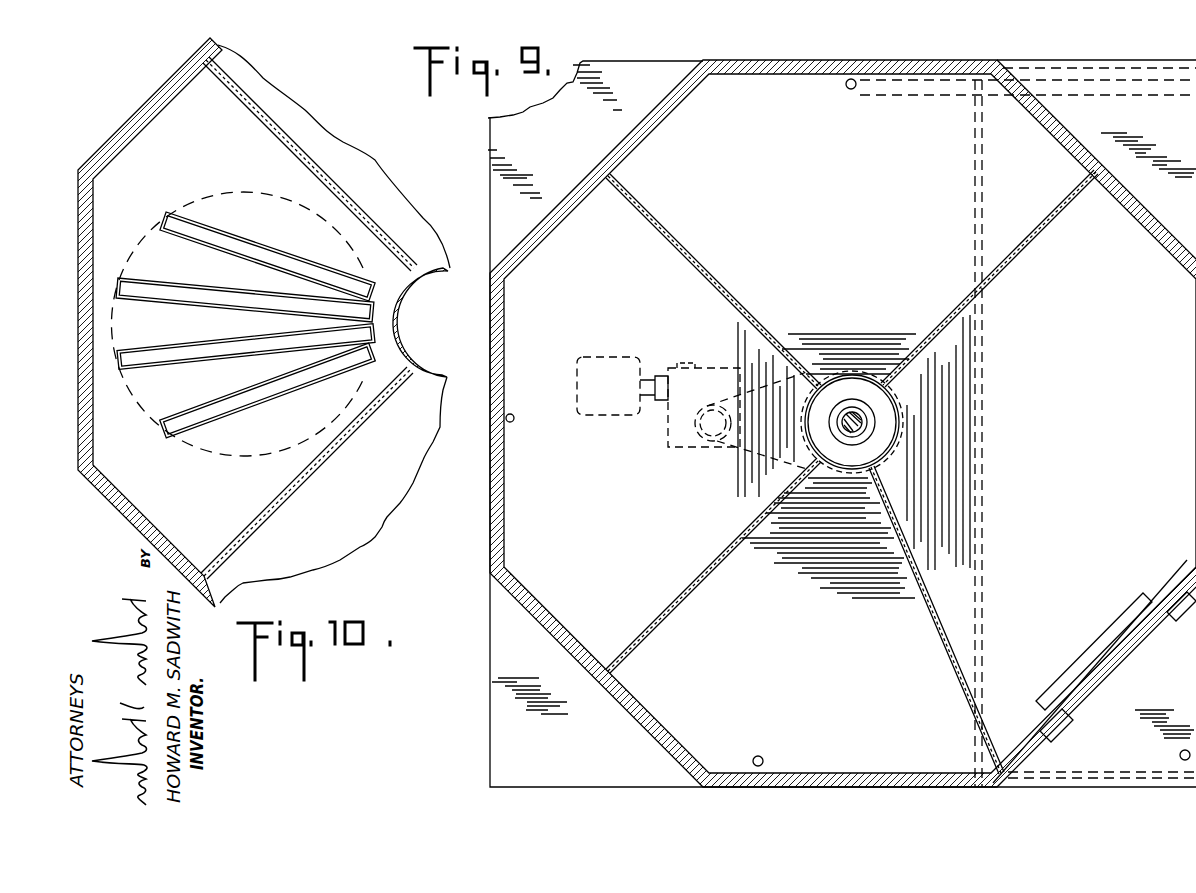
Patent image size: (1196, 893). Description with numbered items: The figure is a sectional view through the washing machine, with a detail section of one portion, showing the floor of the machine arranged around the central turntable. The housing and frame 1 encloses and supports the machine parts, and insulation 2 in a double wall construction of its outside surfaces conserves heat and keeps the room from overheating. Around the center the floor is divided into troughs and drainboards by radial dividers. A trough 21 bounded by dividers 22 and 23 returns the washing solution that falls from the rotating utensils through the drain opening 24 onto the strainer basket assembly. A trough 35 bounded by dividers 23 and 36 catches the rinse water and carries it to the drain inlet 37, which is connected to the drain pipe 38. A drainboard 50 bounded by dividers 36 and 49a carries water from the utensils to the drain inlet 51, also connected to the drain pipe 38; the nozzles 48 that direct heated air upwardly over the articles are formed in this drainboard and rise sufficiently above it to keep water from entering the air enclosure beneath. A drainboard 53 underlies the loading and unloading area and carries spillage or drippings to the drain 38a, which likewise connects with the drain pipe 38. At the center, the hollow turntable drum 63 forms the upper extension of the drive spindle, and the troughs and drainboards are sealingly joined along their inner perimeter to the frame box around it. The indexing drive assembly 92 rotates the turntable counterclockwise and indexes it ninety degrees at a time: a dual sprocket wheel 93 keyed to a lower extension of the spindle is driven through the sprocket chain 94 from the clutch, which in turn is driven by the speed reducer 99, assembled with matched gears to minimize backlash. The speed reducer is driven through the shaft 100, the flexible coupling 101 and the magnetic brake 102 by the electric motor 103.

In FIG. 10, the housing and frame 1 is at (104, 516).
In FIG. 9, the insulation 2 is at (490, 560).
In FIG. 10, the insulation 2 is at (210, 620).
In FIG. 9, the trough 21 is at (1127, 404).
In FIG. 9, the divider 22 is at (920, 582).
In FIG. 9, the divider 23 is at (1042, 240).
In FIG. 9, the drain opening 24 is at (1118, 630).
In FIG. 9, the trough 35 is at (862, 207).
In FIG. 9, the divider 36 is at (690, 247).
In FIG. 10, the divider 36 is at (312, 158).
In FIG. 9, the drain inlet 37 is at (846, 86).
In FIG. 9, the drain pipe 38 is at (1086, 96).
In FIG. 9, the drain 38a is at (764, 760).
In FIG. 10, the nozzles 48 is at (260, 256).
In FIG. 9, the divider 49a is at (676, 612).
In FIG. 10, the divider 49a is at (322, 452).
In FIG. 9, the drainboard 50 is at (639, 532).
In FIG. 10, the drainboard 50 is at (229, 142).
In FIG. 9, the drain inlet 51 is at (514, 423).
In FIG. 9, the drainboard 53 is at (827, 632).
In FIG. 9, the turntable drum 63 is at (918, 440).
In FIG. 9, the indexing drive assembly 92 is at (700, 333).
In FIG. 9, the dual sprocket wheel 93 is at (856, 370).
In FIG. 9, the sprocket chain 94 is at (780, 310).
In FIG. 9, the speed reducer 99 is at (686, 440).
In FIG. 9, the shaft 100 is at (660, 412).
In FIG. 9, the flexible coupling 101 is at (660, 376).
In FIG. 9, the magnetic brake 102 is at (645, 435).
In FIG. 9, the electric motor 103 is at (590, 416).